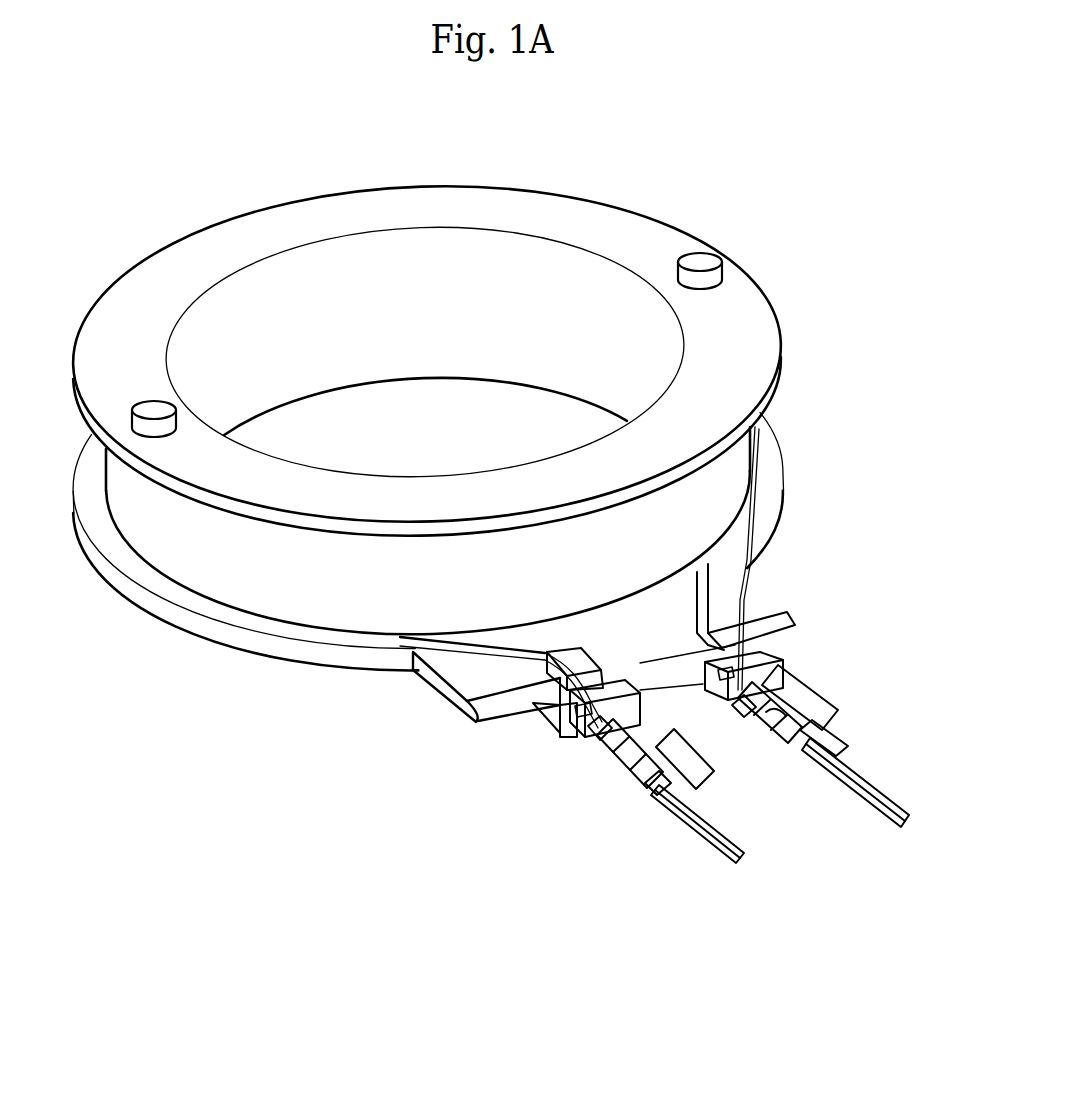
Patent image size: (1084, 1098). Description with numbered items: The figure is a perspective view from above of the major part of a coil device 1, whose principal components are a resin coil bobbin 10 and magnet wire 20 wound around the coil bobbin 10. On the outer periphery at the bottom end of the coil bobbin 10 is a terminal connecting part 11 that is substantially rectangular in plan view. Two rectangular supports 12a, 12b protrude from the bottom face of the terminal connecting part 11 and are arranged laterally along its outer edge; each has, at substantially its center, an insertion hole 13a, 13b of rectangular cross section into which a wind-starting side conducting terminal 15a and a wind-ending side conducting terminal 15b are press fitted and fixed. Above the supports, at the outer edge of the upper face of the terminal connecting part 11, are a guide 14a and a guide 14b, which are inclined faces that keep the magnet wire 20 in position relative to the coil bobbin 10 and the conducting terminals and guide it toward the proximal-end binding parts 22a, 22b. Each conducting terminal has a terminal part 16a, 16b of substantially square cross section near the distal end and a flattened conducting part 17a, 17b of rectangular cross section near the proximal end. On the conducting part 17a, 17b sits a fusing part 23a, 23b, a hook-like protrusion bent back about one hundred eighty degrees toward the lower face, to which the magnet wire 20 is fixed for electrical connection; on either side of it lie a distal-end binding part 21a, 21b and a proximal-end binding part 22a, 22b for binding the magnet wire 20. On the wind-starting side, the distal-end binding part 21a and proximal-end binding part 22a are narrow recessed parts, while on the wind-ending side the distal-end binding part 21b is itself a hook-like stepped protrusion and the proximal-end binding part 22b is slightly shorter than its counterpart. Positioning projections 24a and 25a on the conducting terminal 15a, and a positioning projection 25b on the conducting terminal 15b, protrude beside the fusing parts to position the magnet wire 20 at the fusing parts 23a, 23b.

The coil device 1 is at (812, 210).
The coil bobbin 10 is at (617, 205).
The terminal connecting part 11 is at (428, 690).
The support 12a is at (677, 680).
The support 12b is at (550, 730).
The insertion hole 13a is at (774, 665).
The insertion hole 13b is at (631, 695).
The guide 14a is at (755, 625).
The guide 14b is at (577, 667).
The wind-starting side conducting terminal 15a is at (873, 797).
The wind-ending side conducting terminal 15b is at (710, 843).
The terminal part 16a is at (851, 811).
The terminal part 16b is at (688, 858).
The conducting part 17a is at (813, 690).
The conducting part 17b is at (673, 743).
The magnet wire 20 is at (757, 605).
The distal-end binding part 21a is at (832, 720).
The distal-end binding part 21b is at (643, 777).
The proximal-end binding part 22a is at (753, 652).
The proximal-end binding part 22b is at (610, 690).
The fusing part 23a is at (808, 745).
The fusing part 23b is at (613, 750).
The positioning projection 24a is at (773, 715).
The positioning projection 25a is at (747, 713).
The positioning projection 25b is at (593, 747).